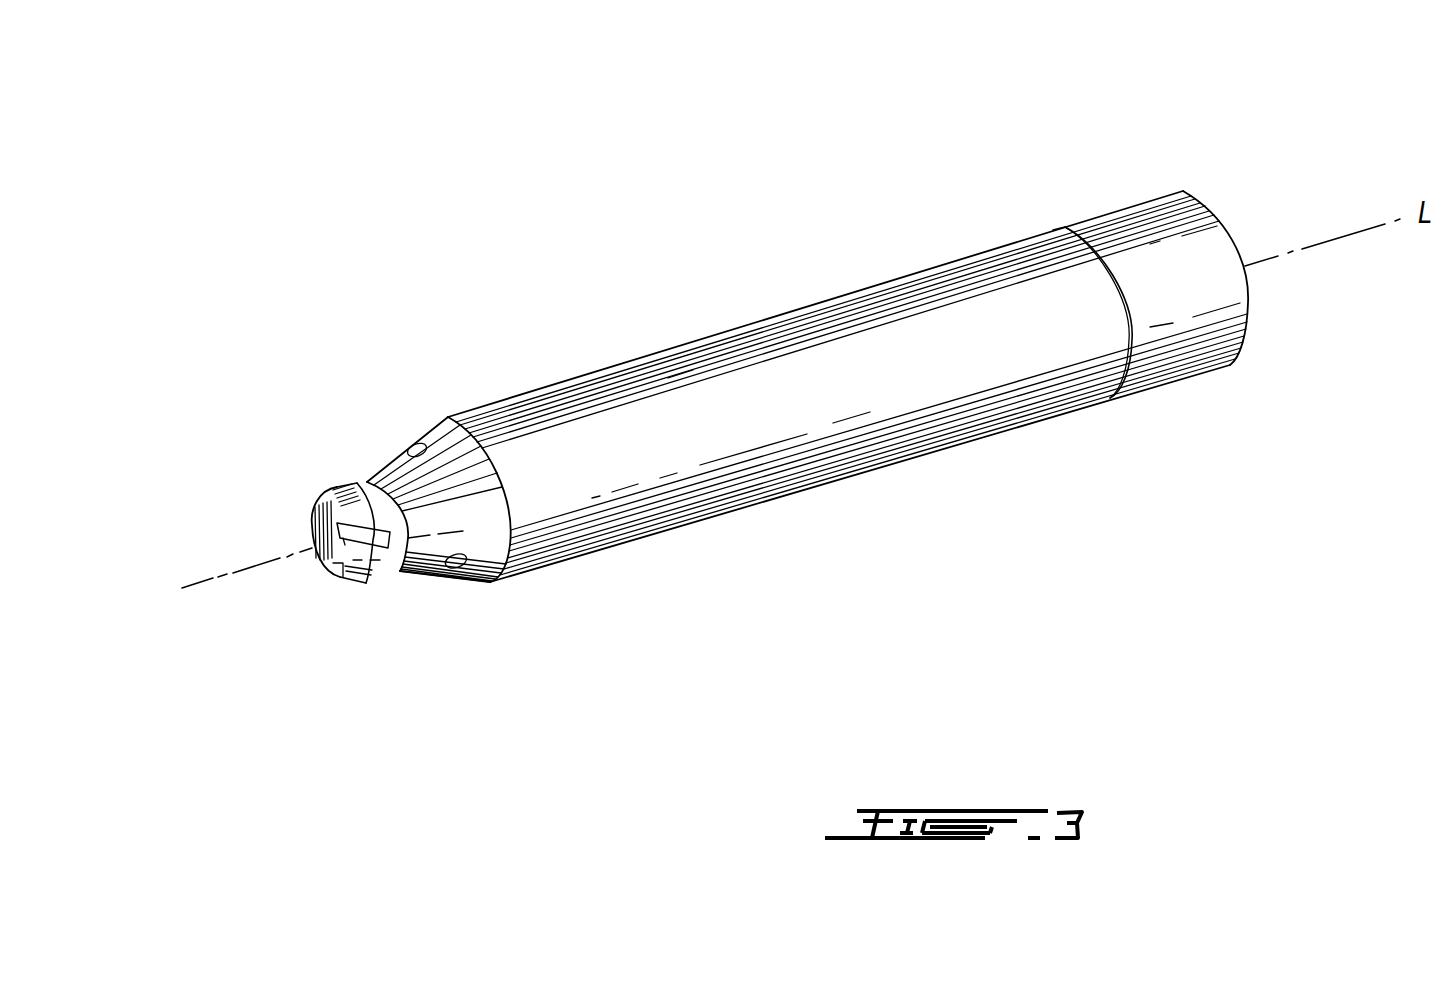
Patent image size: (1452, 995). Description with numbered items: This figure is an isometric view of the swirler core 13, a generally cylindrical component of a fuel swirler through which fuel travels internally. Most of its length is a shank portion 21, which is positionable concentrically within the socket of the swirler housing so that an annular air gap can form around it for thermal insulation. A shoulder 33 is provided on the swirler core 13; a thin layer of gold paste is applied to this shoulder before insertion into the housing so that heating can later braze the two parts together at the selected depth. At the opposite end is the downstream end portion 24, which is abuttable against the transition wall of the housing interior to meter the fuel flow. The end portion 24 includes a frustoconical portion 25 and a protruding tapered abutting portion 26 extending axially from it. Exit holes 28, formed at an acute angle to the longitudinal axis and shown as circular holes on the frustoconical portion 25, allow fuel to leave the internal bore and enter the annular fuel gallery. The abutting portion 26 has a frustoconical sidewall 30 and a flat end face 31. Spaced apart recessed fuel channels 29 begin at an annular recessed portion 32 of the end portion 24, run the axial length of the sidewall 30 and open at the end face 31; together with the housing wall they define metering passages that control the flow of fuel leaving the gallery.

The swirler core 13 is at (427, 212).
The shank portion 21 is at (812, 330).
The downstream end portion 24 is at (362, 612).
The frustoconical portion 25 is at (374, 494).
The protruding tapered abutting portion 26 is at (293, 530).
The exit holes 28 is at (415, 450).
The fuel channels 29 is at (312, 525).
The frustoconical sidewall 30 is at (332, 500).
The flat end face 31 is at (327, 548).
The annular recessed portion 32 is at (375, 497).
The shoulder 33 is at (1140, 230).